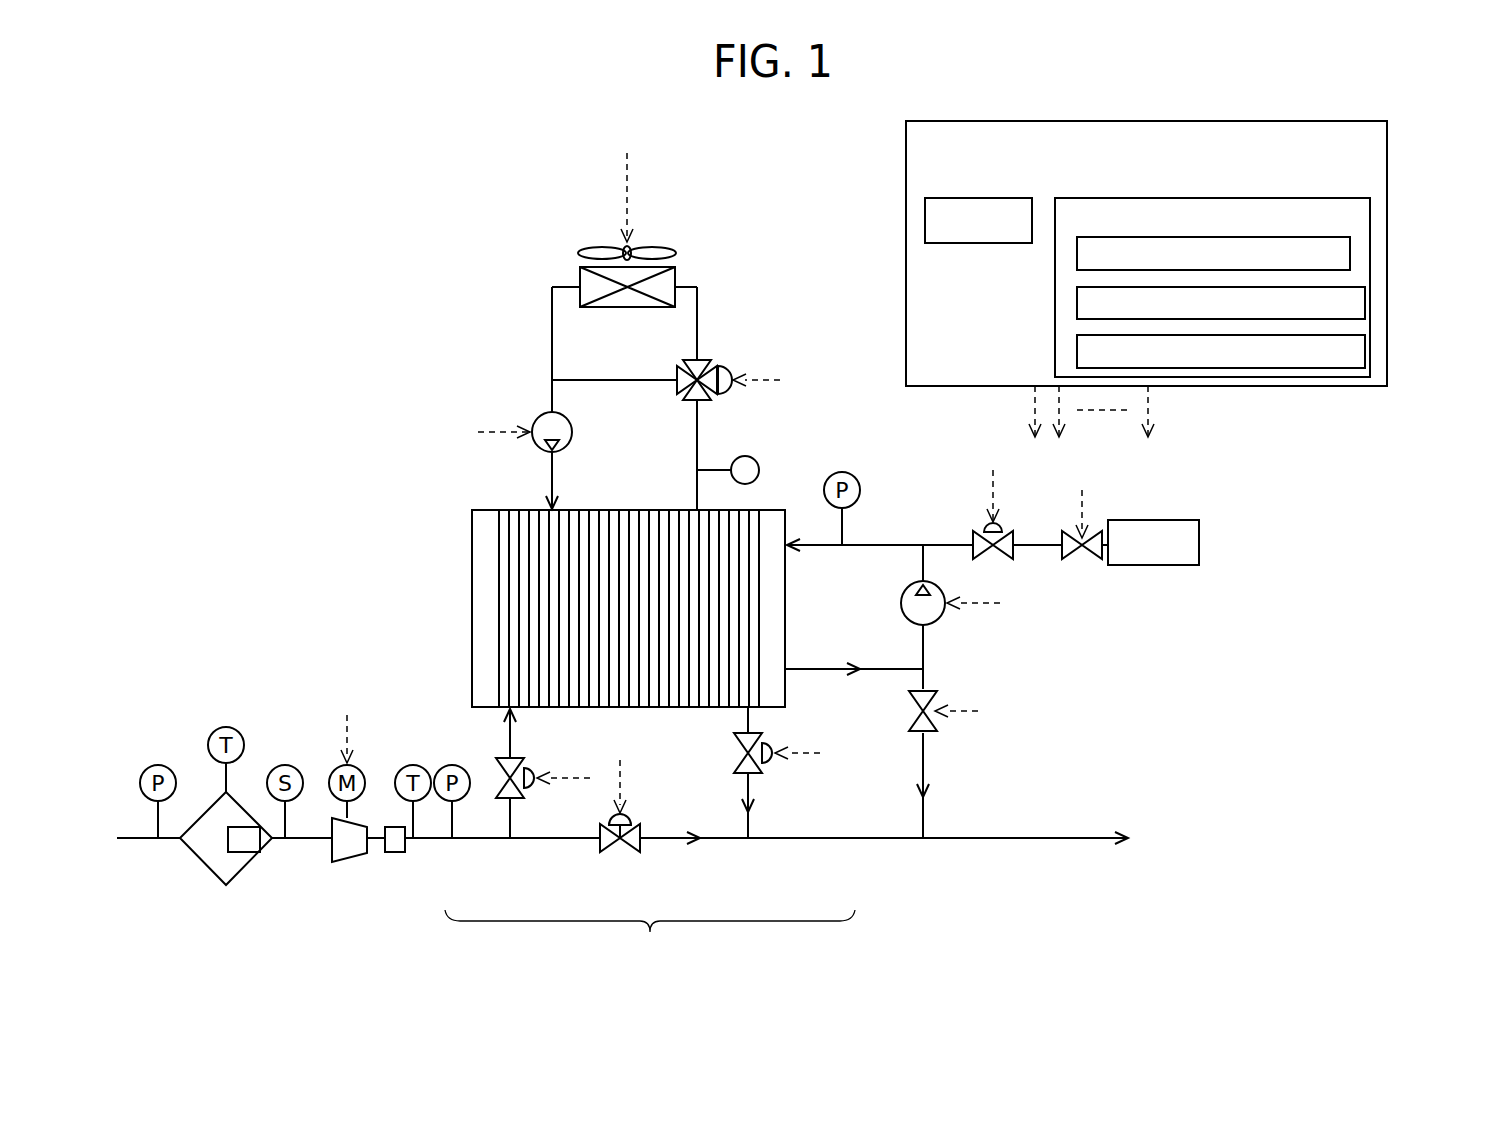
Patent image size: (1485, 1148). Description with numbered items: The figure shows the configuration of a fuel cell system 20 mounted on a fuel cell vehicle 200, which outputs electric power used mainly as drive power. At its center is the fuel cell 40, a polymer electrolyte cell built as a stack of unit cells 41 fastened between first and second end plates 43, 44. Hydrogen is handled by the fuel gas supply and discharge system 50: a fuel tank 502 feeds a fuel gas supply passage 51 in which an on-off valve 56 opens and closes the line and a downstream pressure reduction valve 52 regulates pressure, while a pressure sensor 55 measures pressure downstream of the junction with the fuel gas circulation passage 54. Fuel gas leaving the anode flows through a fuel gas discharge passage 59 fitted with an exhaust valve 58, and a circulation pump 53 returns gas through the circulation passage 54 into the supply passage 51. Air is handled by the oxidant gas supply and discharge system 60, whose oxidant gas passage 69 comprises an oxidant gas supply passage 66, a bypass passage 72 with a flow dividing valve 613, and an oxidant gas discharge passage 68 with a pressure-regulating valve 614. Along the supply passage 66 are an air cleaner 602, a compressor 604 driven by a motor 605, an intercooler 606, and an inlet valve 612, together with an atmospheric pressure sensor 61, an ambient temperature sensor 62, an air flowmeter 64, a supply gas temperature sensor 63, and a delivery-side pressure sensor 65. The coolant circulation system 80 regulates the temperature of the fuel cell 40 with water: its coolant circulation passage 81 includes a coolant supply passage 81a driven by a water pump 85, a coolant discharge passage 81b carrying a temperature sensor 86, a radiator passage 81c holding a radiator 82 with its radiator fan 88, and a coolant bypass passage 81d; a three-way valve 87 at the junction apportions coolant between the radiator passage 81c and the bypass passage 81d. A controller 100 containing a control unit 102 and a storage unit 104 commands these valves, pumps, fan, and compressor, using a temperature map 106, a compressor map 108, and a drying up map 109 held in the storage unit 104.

The fuel cell system 20 is at (249, 261).
The fuel cell vehicle 200 is at (288, 294).
The fuel cell 40 is at (600, 579).
The unit cells 41 is at (623, 510).
The first end plate 43 is at (483, 522).
The second end plate 44 is at (776, 522).
The fuel gas supply and discharge system 50 is at (1201, 496).
The fuel tank 502 is at (1119, 520).
The fuel gas supply passage 51 is at (895, 543).
The pressure reduction valve 52 is at (977, 556).
The circulation pump 53 is at (903, 598).
The fuel gas circulation passage 54 is at (925, 639).
The pressure sensor 55 is at (832, 475).
The on-off valve 56 is at (1090, 556).
The exhaust valve 58 is at (963, 711).
The fuel gas discharge passage 59 is at (875, 668).
The oxidant gas supply and discharge system 60 is at (226, 896).
The air cleaner 602 is at (210, 803).
The compressor 604 is at (330, 855).
The motor 605 is at (332, 781).
The intercooler 606 is at (387, 855).
The atmospheric pressure sensor 61 is at (140, 780).
The ambient temperature sensor 62 is at (213, 732).
The supply gas temperature sensor 63 is at (402, 767).
The air flowmeter 64 is at (275, 764).
The delivery-side pressure sensor 65 is at (440, 767).
The oxidant gas supply passage 66 is at (497, 808).
The inlet valve 612 is at (502, 757).
The flow dividing valve 613 is at (640, 826).
The pressure-regulating valve 614 is at (733, 746).
The oxidant gas discharge passage 68 is at (892, 808).
The oxidant gas passage 69 is at (650, 937).
The bypass passage 72 is at (629, 834).
The coolant circulation system 80 is at (668, 206).
The coolant circulation passage 81 is at (641, 381).
The coolant supply passage 81a is at (551, 330).
The coolant discharge passage 81b is at (700, 331).
The radiator passage 81c is at (553, 290).
The coolant bypass passage 81d is at (623, 380).
The radiator 82 is at (676, 270).
The water pump 85 is at (573, 433).
The temperature sensor 86 is at (752, 457).
The three-way valve 87 is at (712, 364).
The radiator fan 88 is at (598, 248).
The controller 100 is at (906, 135).
The control unit 102 is at (1028, 198).
The storage unit 104 is at (1285, 198).
The temperature map 106 is at (1293, 237).
The compressor map 108 is at (1365, 298).
The drying up map 109 is at (1365, 350).